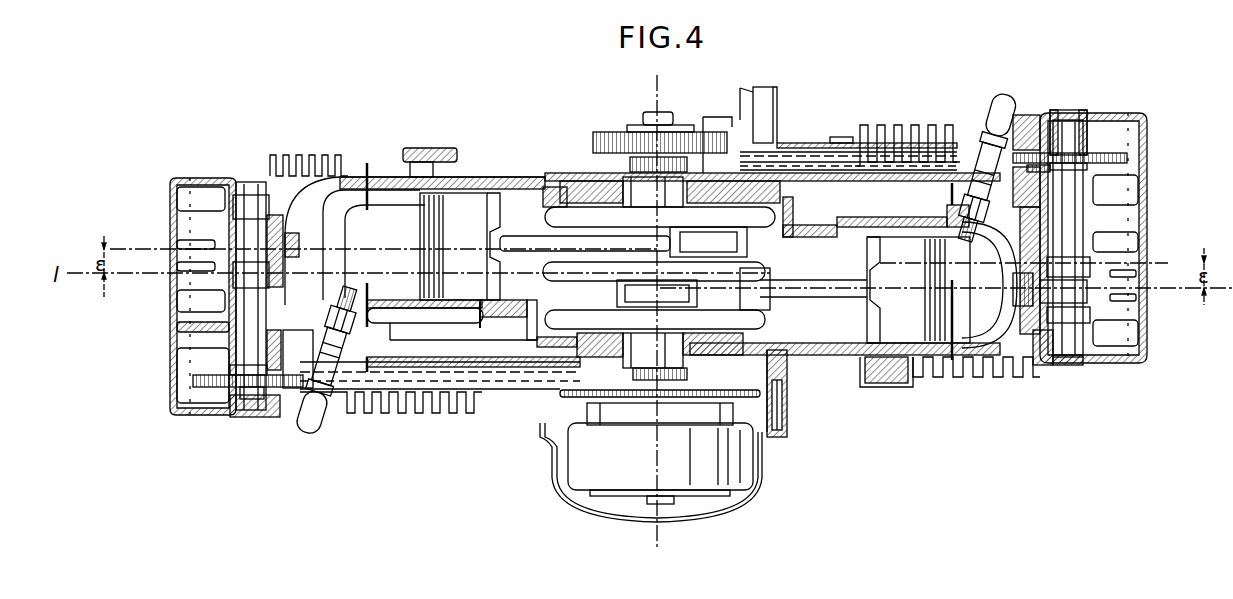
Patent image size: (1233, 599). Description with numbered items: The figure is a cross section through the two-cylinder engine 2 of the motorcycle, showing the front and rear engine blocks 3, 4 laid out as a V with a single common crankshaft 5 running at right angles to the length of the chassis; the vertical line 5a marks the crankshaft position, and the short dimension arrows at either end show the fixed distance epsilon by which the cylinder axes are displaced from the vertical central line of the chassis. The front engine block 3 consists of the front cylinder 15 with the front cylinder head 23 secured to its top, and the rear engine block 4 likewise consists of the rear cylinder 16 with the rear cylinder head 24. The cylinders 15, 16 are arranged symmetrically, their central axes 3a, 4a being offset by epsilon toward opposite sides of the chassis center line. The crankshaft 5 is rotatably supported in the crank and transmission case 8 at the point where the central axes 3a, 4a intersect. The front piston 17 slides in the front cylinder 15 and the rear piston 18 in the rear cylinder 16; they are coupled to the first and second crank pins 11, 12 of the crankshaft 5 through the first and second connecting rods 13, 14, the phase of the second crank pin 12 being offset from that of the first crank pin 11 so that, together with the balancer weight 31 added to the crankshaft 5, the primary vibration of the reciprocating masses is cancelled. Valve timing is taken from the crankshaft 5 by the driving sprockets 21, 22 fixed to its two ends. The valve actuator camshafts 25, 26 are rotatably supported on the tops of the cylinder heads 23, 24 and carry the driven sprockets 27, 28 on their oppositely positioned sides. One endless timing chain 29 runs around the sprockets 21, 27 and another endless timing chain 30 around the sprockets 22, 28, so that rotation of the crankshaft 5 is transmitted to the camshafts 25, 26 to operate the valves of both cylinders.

The two-cylinder engine 2 is at (570, 120).
The front engine block 3 is at (399, 156).
The central axis of front cylinder 3a is at (138, 253).
The rear engine block 4 is at (953, 394).
The central axis of rear cylinder 4a is at (1177, 289).
The crankshaft 5 is at (628, 347).
The crankshaft axis 5a is at (657, 85).
The crank and transmission case 8 is at (782, 372).
The first crank pin 11 is at (738, 239).
The second crank pin 12 is at (657, 305).
The first connecting rod 13 is at (524, 244).
The second connecting rod 14 is at (828, 287).
The front cylinder 15 is at (517, 302).
The rear cylinder 16 is at (875, 372).
The front piston 17 is at (424, 218).
The rear piston 18 is at (938, 300).
The driving sprocket 21 is at (688, 374).
The driving sprocket 22 is at (632, 163).
The front cylinder head 23 is at (309, 153).
The rear cylinder head 24 is at (1050, 350).
The valve actuator camshaft 25 is at (234, 297).
The valve actuator camshaft 26 is at (1080, 236).
The driven sprocket 27 is at (287, 375).
The driven sprocket 28 is at (1033, 167).
The endless timing chain 29 is at (522, 388).
The endless timing chain 30 is at (800, 153).
The balancer weight 31 is at (778, 216).